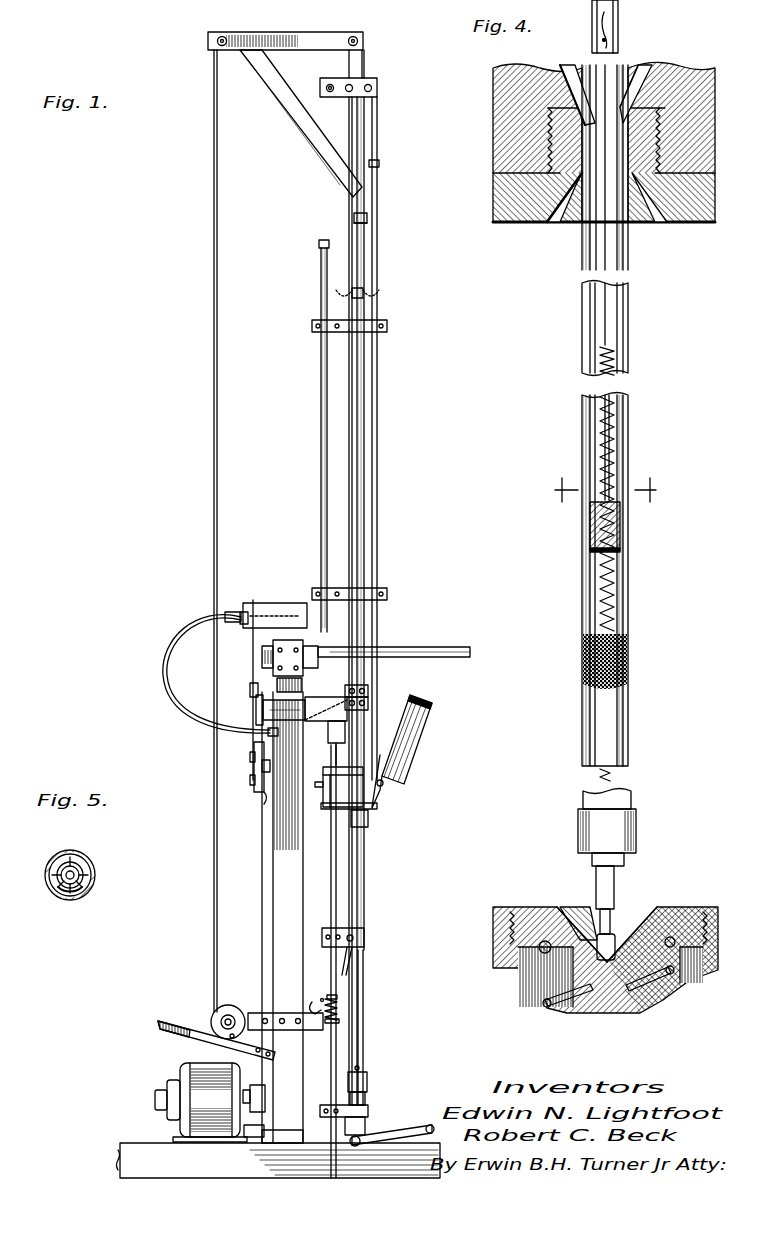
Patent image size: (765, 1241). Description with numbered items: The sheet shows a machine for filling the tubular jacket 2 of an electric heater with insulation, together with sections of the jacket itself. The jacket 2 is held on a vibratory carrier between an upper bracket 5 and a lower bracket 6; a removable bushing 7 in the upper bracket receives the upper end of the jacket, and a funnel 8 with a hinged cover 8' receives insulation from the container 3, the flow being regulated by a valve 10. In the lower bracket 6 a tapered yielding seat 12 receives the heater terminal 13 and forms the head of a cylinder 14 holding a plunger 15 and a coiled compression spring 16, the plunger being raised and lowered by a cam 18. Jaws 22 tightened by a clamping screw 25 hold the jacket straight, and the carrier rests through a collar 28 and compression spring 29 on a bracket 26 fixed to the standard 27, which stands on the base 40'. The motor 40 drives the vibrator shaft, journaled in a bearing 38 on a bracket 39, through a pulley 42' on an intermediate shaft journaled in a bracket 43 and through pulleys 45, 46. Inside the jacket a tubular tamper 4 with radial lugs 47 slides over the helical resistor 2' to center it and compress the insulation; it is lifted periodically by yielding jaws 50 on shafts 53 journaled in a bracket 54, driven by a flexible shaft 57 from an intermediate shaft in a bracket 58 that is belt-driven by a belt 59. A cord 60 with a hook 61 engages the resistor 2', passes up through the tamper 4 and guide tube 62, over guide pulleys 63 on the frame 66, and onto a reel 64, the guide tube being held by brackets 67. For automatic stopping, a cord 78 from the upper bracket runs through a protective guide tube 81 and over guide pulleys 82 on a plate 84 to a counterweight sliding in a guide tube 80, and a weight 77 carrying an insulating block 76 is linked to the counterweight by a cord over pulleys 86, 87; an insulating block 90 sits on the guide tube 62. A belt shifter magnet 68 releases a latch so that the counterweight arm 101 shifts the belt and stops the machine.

In FIG. 1, the jacket 2 is at (358, 961).
In FIG. 4, the jacket 2 is at (618, 423).
In FIG. 5, the jacket 2 is at (64, 869).
In FIG. 4, the helical resistor 2' is at (629, 514).
In FIG. 5, the helical resistor 2' is at (58, 903).
In FIG. 1, the container 3 is at (412, 738).
In FIG. 1, the tamper 4 is at (355, 658).
In FIG. 4, the tamper 4 is at (620, 325).
In FIG. 5, the tamper 4 is at (80, 868).
In FIG. 1, the upper bracket 5 is at (328, 790).
In FIG. 4, the upper bracket 5 is at (606, 490).
In FIG. 1, the lower bracket 6 is at (368, 1110).
In FIG. 1, the removable bushing 7 is at (366, 824).
In FIG. 4, the removable bushing 7 is at (697, 215).
In FIG. 4, the funnel 8 is at (635, 75).
In FIG. 1, the cover 8' is at (363, 813).
In FIG. 1, the valve 10 is at (384, 786).
In FIG. 4, the tapered yielding seat 12 is at (572, 908).
In FIG. 4, the electric heater terminal 13 is at (615, 880).
In FIG. 1, the cylinder 14 is at (368, 1080).
In FIG. 4, the cylinder 14 is at (493, 934).
In FIG. 1, the plunger 15 is at (366, 1097).
In FIG. 4, the coiled compression spring 16 is at (672, 975).
In FIG. 1, the cam 18 is at (400, 1128).
In FIG. 1, the jaws 22 is at (362, 936).
In FIG. 1, the clamping screw 25 is at (364, 942).
In FIG. 1, the bracket 26 is at (255, 1012).
In FIG. 1, the standard 27 is at (282, 948).
In FIG. 1, the collar 28 is at (338, 1000).
In FIG. 1, the compression spring 29 is at (340, 1021).
In FIG. 1, the bearing 38 is at (263, 714).
In FIG. 1, the bracket 39 is at (326, 732).
In FIG. 1, the motor 40 is at (210, 1094).
In FIG. 1, the base 40' is at (279, 1161).
In FIG. 1, the pulley 42' is at (243, 767).
In FIG. 1, the bracket 43 is at (262, 770).
In FIG. 1, the pulley 45 is at (264, 801).
In FIG. 1, the pulley 46 is at (250, 690).
In FIG. 4, the radial lugs 47 is at (590, 546).
In FIG. 5, the radial lugs 47 is at (92, 880).
In FIG. 1, the yielding jaws 50 is at (368, 712).
In FIG. 1, the rotatable shaft 53 is at (369, 702).
In FIG. 1, the bracket 54 is at (369, 690).
In FIG. 1, the flexible shaft 57 is at (164, 688).
In FIG. 1, the bracket 58 is at (278, 612).
In FIG. 1, the belt 59 is at (262, 660).
In FIG. 1, the cord 60 is at (364, 66).
In FIG. 4, the cord 60 is at (618, 12).
In FIG. 4, the hook 61 is at (610, 30).
In FIG. 1, the guide tube 62 is at (353, 404).
In FIG. 1, the guide pulleys 63 is at (224, 46).
In FIG. 1, the reel 64 is at (240, 998).
In FIG. 1, the frame 66 is at (378, 126).
In FIG. 1, the brackets 67 is at (313, 327).
In FIG. 1, the belt shifter magnet 68 is at (316, 1002).
In FIG. 1, the insulating block 76 is at (367, 224).
In FIG. 1, the weight 77 is at (367, 215).
In FIG. 1, the cord 78 is at (379, 160).
In FIG. 1, the guide tube 80 is at (320, 442).
In FIG. 1, the protective guide tube 81 is at (365, 483).
In FIG. 1, the guide pulley 82 is at (378, 89).
In FIG. 1, the plate 84 is at (340, 80).
In FIG. 1, the pulley 86 is at (349, 100).
In FIG. 1, the pulley 87 is at (326, 88).
In FIG. 1, the insulating block 90 is at (364, 293).
In FIG. 1, the counterweight arm 101 is at (178, 1024).